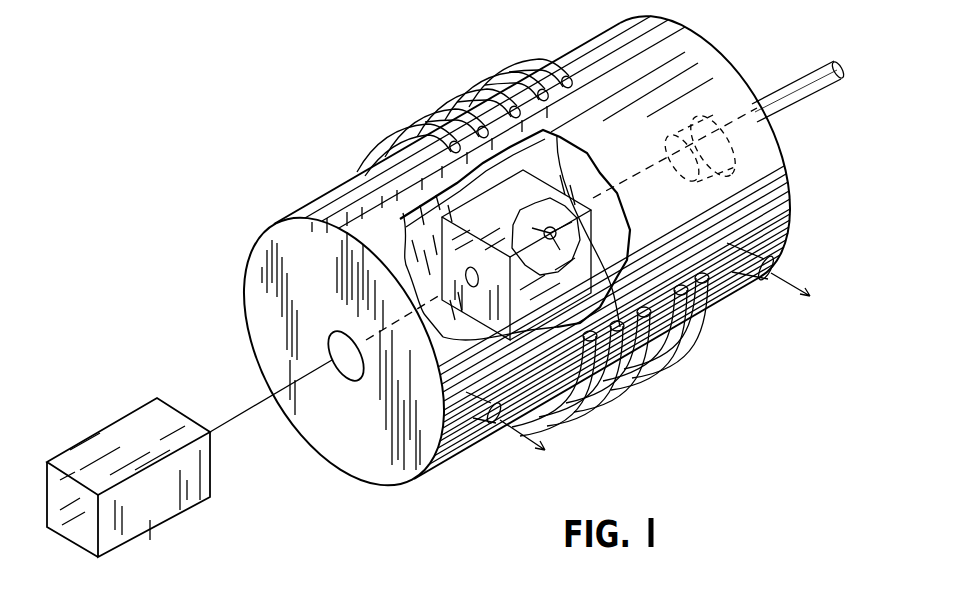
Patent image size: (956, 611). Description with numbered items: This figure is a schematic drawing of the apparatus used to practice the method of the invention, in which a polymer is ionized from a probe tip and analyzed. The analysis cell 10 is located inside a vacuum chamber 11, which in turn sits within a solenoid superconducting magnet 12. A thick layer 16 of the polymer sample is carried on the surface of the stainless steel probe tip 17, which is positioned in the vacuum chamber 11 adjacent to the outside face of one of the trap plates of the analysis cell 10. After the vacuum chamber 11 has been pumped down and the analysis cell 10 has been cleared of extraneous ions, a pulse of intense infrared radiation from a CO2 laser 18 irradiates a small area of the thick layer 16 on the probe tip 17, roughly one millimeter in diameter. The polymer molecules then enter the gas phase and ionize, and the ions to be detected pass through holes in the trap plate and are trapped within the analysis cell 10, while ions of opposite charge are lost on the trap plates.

The analysis cell 10 is at (632, 368).
The vacuum chamber 11 is at (447, 460).
The solenoid superconducting magnet 12 is at (584, 404).
The thick layer of polymer 16 is at (584, 150).
The stainless steel probe tip 17 is at (615, 225).
The CO2 laser 18 is at (158, 517).